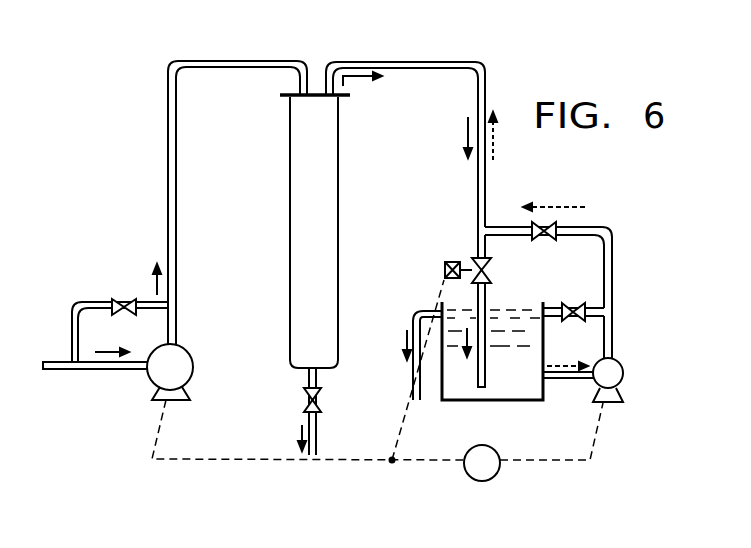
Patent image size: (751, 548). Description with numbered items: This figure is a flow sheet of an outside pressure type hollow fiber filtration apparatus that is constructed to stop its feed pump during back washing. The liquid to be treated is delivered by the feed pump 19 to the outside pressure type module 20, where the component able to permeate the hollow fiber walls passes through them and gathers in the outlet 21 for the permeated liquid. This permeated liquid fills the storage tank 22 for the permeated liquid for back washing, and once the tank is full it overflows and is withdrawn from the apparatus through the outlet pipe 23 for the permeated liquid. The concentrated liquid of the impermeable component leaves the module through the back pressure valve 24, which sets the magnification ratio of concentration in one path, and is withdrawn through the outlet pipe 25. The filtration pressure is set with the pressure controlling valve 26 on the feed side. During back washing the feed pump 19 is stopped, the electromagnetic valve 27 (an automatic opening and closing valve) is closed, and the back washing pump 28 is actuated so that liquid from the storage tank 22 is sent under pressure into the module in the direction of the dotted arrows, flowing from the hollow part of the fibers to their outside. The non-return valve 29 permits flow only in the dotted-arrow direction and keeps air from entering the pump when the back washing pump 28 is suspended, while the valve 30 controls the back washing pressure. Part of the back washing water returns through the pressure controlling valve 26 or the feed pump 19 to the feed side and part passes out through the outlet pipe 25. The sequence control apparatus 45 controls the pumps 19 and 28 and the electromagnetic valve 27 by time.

The feed pump 19 is at (183, 362).
The outside pressure type module 20 is at (300, 200).
The outlet for the permeated liquid 21 is at (325, 73).
The storage tank for the permeated liquid for back washing 22 is at (510, 402).
The outlet pipe for the permeated liquid 23 is at (420, 406).
The back pressure valve 24 is at (304, 396).
The outlet pipe for withdrawing the concentrated liquid 25 is at (316, 436).
The pressure controlling valve 26 is at (128, 300).
The electromagnetic valve 27 is at (462, 262).
The back washing pump 28 is at (620, 372).
The non-return valve 29 is at (543, 225).
The valve for controlling back washing pressure 30 is at (578, 303).
The sequence control apparatus 45 is at (482, 445).